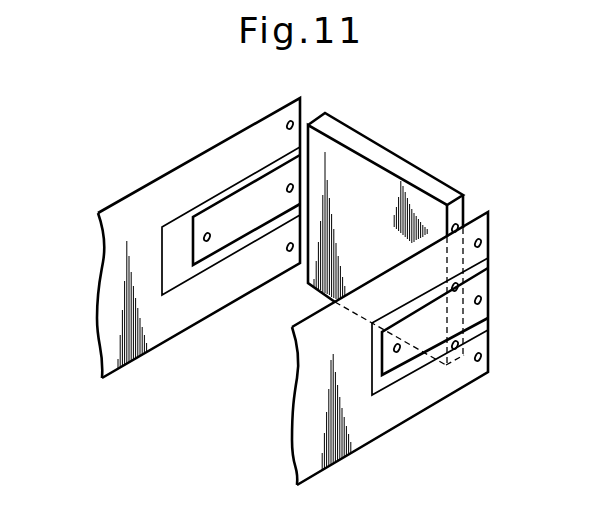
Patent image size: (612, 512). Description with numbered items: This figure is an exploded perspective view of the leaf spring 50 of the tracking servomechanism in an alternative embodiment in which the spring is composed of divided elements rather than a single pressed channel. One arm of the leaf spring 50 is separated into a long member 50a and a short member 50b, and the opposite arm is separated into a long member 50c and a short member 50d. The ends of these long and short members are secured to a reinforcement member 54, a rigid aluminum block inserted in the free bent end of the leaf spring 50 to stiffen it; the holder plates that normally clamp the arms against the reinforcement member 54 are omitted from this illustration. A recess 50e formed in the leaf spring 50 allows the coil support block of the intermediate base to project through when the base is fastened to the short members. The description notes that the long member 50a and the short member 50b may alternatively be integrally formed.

The leaf spring 50 is at (128, 189).
The long member 50a is at (408, 400).
The short member 50b is at (423, 337).
The long member 50c is at (197, 307).
The short member 50d is at (217, 217).
The recess 50e is at (170, 254).
The reinforcement member 54 is at (420, 182).